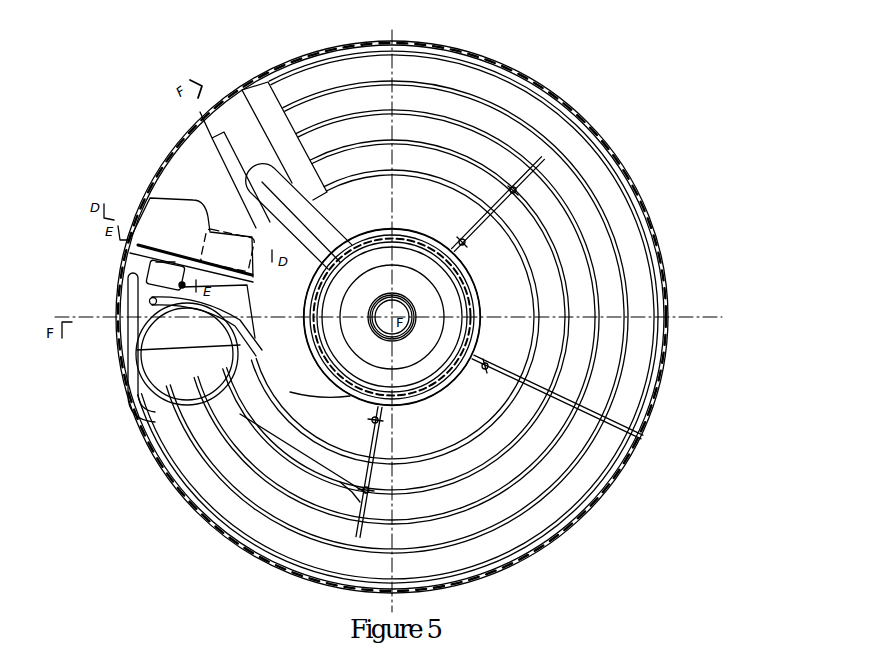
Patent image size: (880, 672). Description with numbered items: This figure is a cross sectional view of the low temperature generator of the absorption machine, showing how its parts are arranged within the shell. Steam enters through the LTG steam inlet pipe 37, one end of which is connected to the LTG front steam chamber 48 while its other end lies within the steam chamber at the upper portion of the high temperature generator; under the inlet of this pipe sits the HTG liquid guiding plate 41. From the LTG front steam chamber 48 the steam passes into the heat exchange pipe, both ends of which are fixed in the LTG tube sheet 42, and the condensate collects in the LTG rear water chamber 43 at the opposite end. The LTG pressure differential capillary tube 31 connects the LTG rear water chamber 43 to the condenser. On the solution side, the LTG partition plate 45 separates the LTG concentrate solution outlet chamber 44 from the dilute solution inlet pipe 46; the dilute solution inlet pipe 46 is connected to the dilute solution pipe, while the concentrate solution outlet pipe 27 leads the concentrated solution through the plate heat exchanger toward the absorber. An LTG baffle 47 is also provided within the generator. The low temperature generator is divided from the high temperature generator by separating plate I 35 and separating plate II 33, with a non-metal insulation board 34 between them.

The concentrate solution outlet pipe 27 is at (135, 230).
The LTG pressure differential capillary tube 31 is at (163, 402).
The separating plate II of the HTG and LTG 33 is at (478, 333).
The non-metal insulation board 34 is at (473, 300).
The separating plate I of the HTG and LTG 35 is at (347, 397).
The LTG steam inlet pipe 37 is at (287, 217).
The HTG liquid guiding plate 41 is at (415, 292).
The LTG tube sheet 42 is at (190, 280).
The LTG rear water chamber 43 is at (172, 252).
The LTG concentrate solution outlet chamber 44 is at (230, 390).
The LTG partition plate 45 is at (150, 262).
The dilute solution inlet pipe 46 is at (155, 263).
The LTG baffle 47 is at (118, 298).
The LTG front steam chamber 48 is at (247, 132).